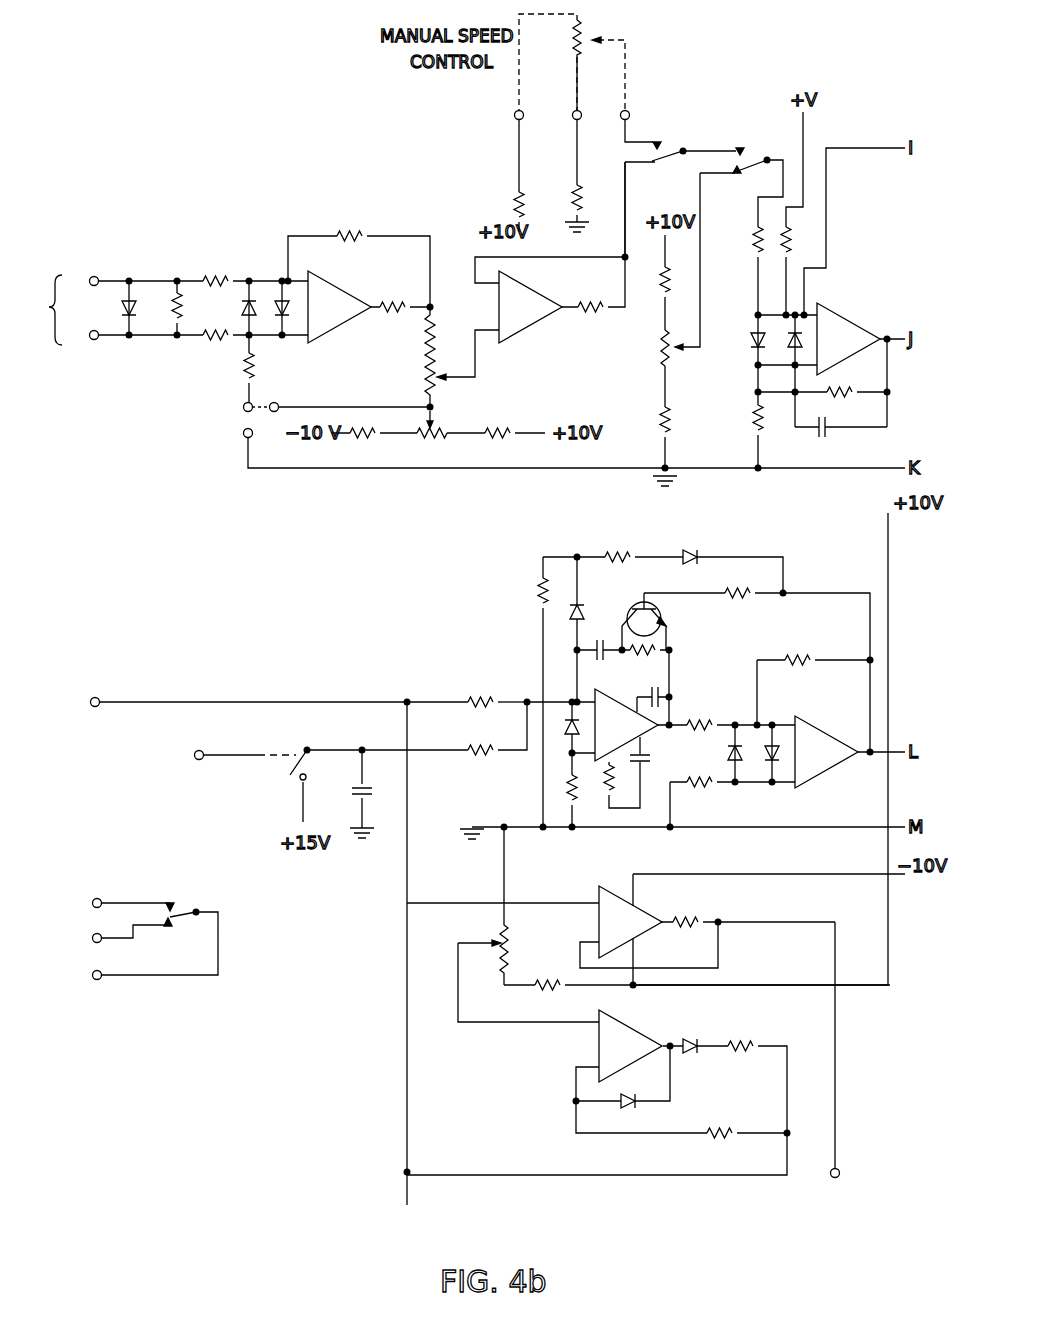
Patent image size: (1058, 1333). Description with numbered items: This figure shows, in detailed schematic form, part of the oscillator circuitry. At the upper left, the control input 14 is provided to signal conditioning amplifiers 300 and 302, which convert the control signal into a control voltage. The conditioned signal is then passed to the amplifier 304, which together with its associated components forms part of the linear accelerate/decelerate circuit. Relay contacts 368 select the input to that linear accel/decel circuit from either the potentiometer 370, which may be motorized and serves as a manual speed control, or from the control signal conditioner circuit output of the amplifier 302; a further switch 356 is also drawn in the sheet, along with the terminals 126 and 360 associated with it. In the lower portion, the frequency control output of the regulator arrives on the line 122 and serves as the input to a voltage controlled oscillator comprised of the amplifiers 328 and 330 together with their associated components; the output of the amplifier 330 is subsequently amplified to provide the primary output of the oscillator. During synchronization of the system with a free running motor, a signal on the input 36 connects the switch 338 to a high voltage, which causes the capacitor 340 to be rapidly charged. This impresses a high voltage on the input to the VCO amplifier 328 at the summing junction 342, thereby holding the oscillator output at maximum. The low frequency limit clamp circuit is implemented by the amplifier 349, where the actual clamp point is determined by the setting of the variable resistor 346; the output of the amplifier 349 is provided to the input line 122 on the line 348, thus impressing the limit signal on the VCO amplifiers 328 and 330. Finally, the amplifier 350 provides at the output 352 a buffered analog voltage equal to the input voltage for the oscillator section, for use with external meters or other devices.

The control input 14 is at (63, 308).
The signal conditioning amplifier 300 is at (333, 315).
The signal conditioning amplifier 302 is at (533, 310).
The amplifier 304 is at (843, 335).
The relay contacts 368 is at (668, 140).
The potentiometer 370 is at (576, 42).
The switch 356 is at (752, 150).
The line 122 is at (262, 701).
The input 36 is at (241, 742).
The switch 338 is at (300, 748).
The capacitor 340 is at (392, 778).
The summing junction 342 is at (527, 699).
The VCO amplifier 328 is at (632, 722).
The amplifier 330 is at (832, 755).
The input terminal 126 is at (80, 902).
The terminal 360 is at (78, 974).
The amplifier 350 is at (635, 917).
The variable resistor 346 is at (515, 948).
The amplifier 349 is at (598, 1046).
The line 348 is at (790, 1130).
The output 352 is at (856, 1052).